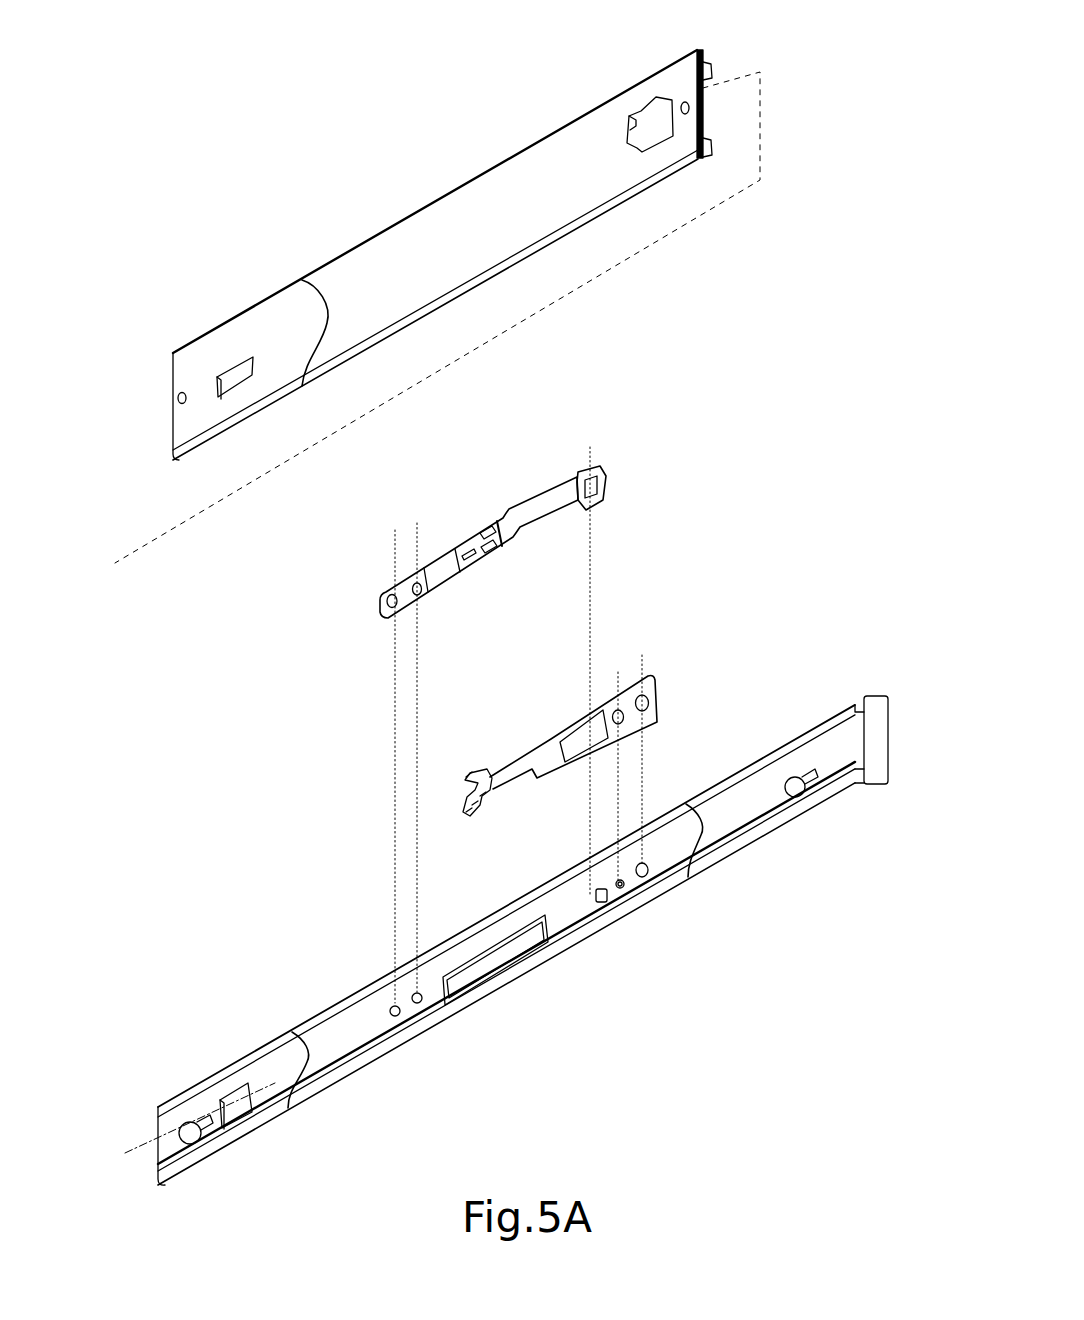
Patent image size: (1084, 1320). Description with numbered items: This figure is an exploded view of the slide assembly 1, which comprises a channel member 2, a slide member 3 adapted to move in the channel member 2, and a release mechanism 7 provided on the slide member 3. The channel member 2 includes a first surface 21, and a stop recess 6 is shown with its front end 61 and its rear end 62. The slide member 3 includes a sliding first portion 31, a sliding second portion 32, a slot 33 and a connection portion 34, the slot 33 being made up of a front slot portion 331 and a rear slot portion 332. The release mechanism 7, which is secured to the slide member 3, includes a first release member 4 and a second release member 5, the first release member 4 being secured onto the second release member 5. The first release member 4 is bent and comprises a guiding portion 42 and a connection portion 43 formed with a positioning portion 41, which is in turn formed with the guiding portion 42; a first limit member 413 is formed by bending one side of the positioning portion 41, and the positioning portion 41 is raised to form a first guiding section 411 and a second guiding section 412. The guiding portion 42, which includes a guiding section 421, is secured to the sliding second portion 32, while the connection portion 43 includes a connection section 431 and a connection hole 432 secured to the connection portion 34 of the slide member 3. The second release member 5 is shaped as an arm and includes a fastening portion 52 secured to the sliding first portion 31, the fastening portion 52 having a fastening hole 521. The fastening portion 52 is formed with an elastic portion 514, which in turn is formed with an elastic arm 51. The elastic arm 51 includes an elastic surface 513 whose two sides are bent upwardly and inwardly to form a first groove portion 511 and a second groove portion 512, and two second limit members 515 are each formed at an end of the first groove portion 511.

The slide assembly 1 is at (252, 238).
The channel member 2 is at (410, 217).
The first surface 21 is at (704, 90).
The slide member 3 is at (850, 752).
The sliding first portion 31 is at (648, 880).
The sliding second portion 32 is at (378, 1048).
The slot 33 is at (487, 973).
The front slot portion 331 is at (549, 930).
The rear slot portion 332 is at (420, 1003).
The connection portion 34 is at (600, 905).
The first release member 4 is at (634, 460).
The positioning portion 41 is at (462, 546).
The first guiding section 411 is at (502, 548).
The second guiding section 412 is at (480, 556).
The first limit member 413 is at (488, 528).
The guiding portion 42 is at (384, 597).
The guiding section 421 is at (440, 578).
The connection portion 43 is at (604, 468).
The connection section 431 is at (545, 510).
The connection hole 432 is at (584, 474).
The second release member 5 is at (687, 670).
The elastic arm 51 is at (497, 790).
The first groove portion 511 is at (470, 812).
The second groove portion 512 is at (480, 806).
The elastic surface 513 is at (470, 796).
The elastic portion 514 is at (520, 775).
The second limit member 515 is at (468, 810).
The fastening portion 52 is at (627, 690).
The fastening hole 521 is at (578, 735).
The stop recess 6 is at (645, 118).
The front end 61 is at (679, 100).
The rear end 62 is at (625, 124).
The release mechanism 7 is at (725, 382).